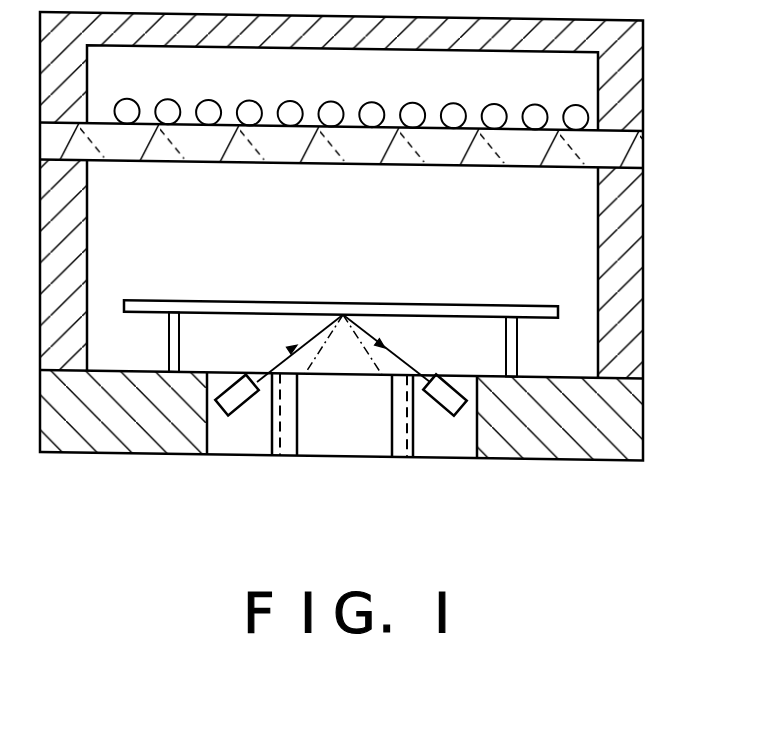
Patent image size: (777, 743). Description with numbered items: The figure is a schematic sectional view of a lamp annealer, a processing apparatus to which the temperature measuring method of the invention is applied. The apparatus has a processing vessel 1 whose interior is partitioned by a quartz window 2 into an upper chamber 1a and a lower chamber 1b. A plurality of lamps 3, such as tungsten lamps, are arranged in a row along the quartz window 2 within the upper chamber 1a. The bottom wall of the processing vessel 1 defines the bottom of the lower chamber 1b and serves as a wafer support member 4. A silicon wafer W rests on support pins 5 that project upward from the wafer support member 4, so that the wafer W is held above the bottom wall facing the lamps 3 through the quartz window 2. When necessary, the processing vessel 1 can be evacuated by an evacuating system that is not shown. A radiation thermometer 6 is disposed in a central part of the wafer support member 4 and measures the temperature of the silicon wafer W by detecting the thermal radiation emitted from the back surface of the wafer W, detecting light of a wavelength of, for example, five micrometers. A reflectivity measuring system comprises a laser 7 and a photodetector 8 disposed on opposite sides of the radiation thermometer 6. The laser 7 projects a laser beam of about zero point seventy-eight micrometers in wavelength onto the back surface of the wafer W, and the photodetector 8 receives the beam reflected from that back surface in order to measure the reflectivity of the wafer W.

The processing vessel 1 is at (666, 210).
The upper chamber 1a is at (633, 56).
The lower chamber 1b is at (630, 317).
The quartz window 2 is at (550, 160).
The lamps 3 is at (164, 97).
The wafer support member 4 is at (575, 452).
The support pins 5 is at (169, 338).
The radiation thermometer 6 is at (343, 455).
The laser 7 is at (246, 409).
The photodetector 8 is at (440, 406).
The silicon wafer W is at (146, 298).